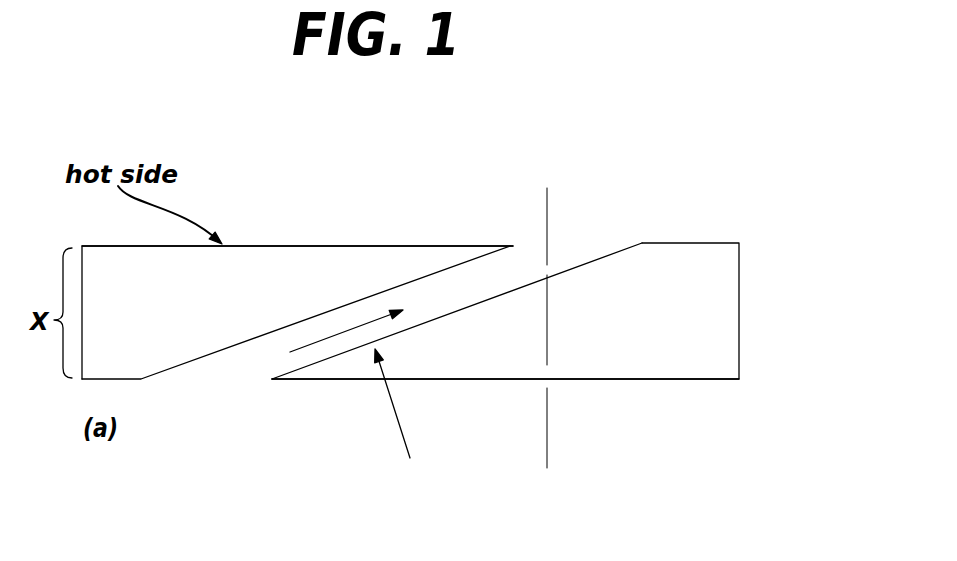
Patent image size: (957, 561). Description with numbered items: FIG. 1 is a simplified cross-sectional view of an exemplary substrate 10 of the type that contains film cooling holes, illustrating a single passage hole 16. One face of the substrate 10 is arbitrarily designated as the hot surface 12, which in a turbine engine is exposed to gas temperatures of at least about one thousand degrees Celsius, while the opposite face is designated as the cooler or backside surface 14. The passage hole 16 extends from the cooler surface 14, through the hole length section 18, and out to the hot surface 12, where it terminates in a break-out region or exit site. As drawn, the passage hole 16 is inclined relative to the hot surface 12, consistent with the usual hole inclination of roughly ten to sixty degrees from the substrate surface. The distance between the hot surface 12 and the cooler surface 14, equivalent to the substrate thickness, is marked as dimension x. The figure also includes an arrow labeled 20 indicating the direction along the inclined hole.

The substrate 10 is at (730, 308).
The hot surface 12 is at (397, 246).
The cooler surface 14 is at (670, 379).
The passage hole 16 is at (572, 242).
The hole length section 18 is at (450, 295).
The direction of cut 20 is at (246, 369).